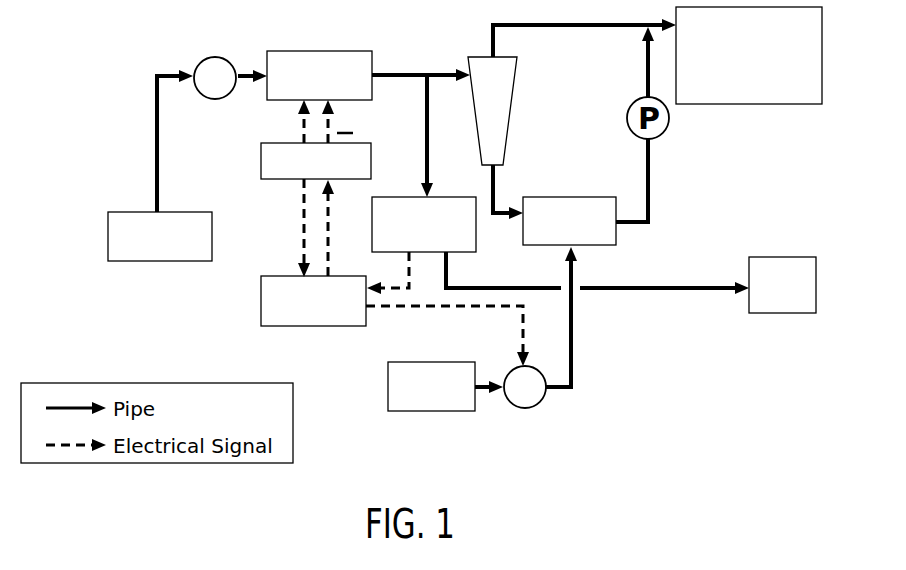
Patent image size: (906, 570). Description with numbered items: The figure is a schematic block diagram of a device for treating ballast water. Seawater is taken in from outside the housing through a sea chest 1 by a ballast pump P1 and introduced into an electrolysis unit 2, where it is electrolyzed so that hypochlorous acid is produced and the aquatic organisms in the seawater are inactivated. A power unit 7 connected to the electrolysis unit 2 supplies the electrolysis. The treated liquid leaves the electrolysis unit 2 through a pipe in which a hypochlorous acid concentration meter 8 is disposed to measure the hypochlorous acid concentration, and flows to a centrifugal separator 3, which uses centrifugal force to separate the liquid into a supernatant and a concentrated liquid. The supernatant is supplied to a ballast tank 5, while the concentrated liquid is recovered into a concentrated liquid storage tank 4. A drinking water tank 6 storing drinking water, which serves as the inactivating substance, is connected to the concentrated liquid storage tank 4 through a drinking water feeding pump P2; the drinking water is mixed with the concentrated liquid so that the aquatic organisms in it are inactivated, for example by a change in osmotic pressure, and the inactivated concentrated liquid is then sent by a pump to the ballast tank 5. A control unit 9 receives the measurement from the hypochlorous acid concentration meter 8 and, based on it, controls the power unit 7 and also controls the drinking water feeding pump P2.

The sea chest 1 is at (160, 262).
The electrolysis unit 2 is at (311, 51).
The centrifugal separator 3 is at (517, 118).
The concentrated liquid storage tank 4 is at (562, 197).
The ballast tank 5 is at (752, 105).
The drinking water tank 6 is at (441, 412).
The power unit 7 is at (281, 180).
The hypochlorous acid concentration meter 8 is at (392, 197).
The control unit 9 is at (336, 327).
The ballast pump P1 is at (216, 100).
The drinking water feeding pump P2 is at (526, 408).